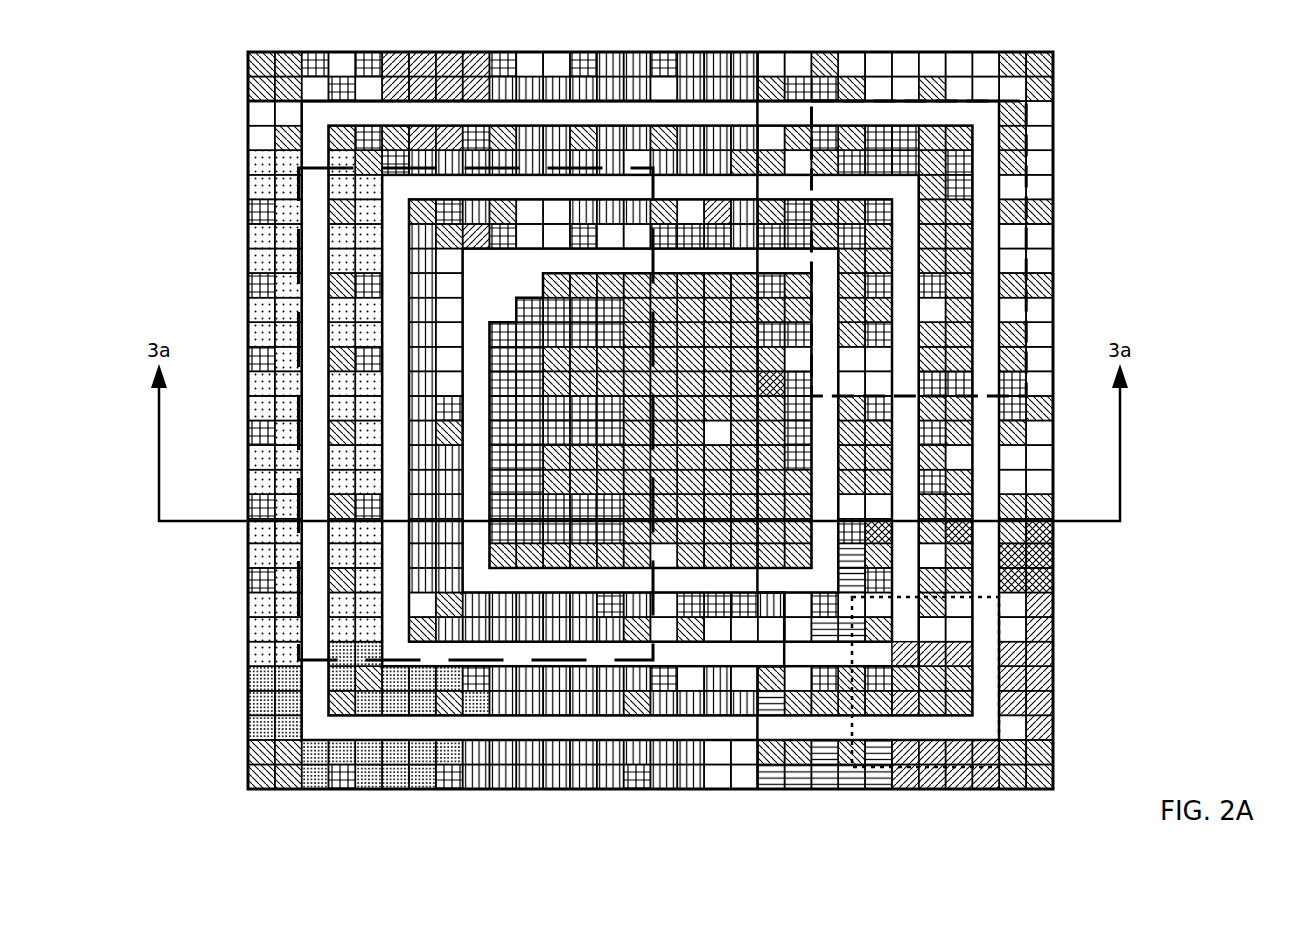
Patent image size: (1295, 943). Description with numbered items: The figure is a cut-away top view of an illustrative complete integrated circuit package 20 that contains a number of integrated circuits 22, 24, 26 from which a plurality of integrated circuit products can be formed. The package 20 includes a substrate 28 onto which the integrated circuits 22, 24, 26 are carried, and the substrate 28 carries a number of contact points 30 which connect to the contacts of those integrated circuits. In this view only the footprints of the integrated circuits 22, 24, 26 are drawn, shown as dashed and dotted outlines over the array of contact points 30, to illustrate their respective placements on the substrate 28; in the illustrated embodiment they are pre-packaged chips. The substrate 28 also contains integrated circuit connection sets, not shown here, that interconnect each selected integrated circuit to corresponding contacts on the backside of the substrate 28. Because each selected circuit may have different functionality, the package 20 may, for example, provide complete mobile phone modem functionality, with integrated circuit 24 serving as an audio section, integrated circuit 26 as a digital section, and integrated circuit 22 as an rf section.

The complete integrated circuit package 20 is at (132, 80).
The integrated circuit 22 is at (1040, 150).
The integrated circuit 24 is at (1040, 606).
The integrated circuit 26 is at (298, 204).
The substrate 28 is at (248, 102).
The contact points 30 is at (1055, 73).